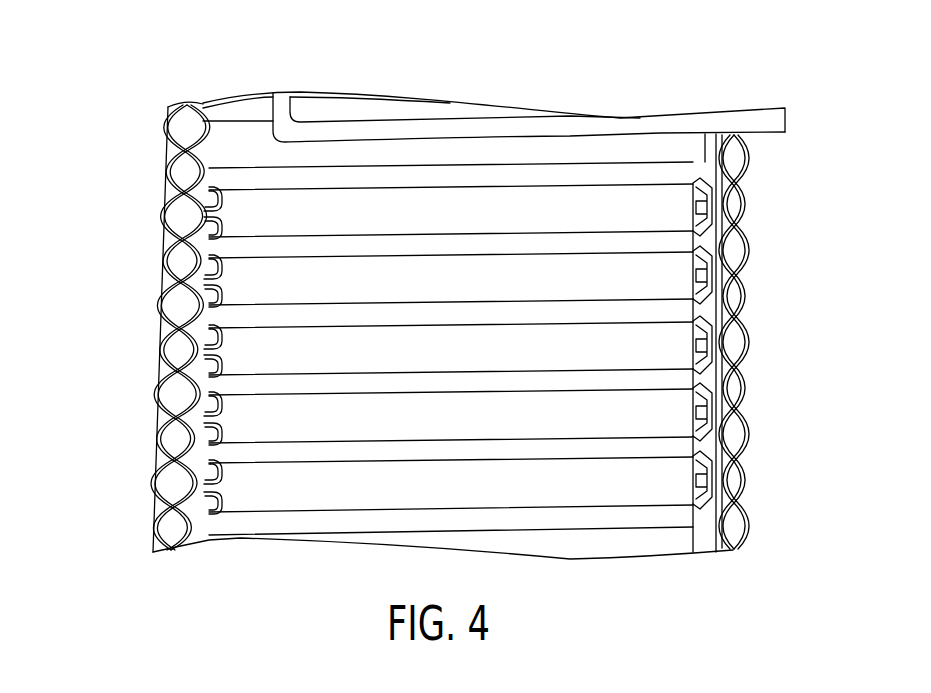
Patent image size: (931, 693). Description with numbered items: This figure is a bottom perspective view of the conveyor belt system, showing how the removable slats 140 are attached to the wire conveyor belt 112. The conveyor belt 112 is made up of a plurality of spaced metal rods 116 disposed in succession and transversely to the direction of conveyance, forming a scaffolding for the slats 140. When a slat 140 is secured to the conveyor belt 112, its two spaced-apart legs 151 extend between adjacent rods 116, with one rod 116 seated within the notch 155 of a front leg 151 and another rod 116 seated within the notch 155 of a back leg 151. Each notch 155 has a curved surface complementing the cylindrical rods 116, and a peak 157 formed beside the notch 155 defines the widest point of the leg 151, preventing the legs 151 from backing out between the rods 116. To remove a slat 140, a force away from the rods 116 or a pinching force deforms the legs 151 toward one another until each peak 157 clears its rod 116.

The wire conveyor belt 112 is at (182, 462).
The rod 116 is at (338, 458).
The removable slat 140 is at (245, 213).
The leg 151 is at (205, 268).
The notch 155 is at (215, 202).
The peak 157 is at (196, 205).